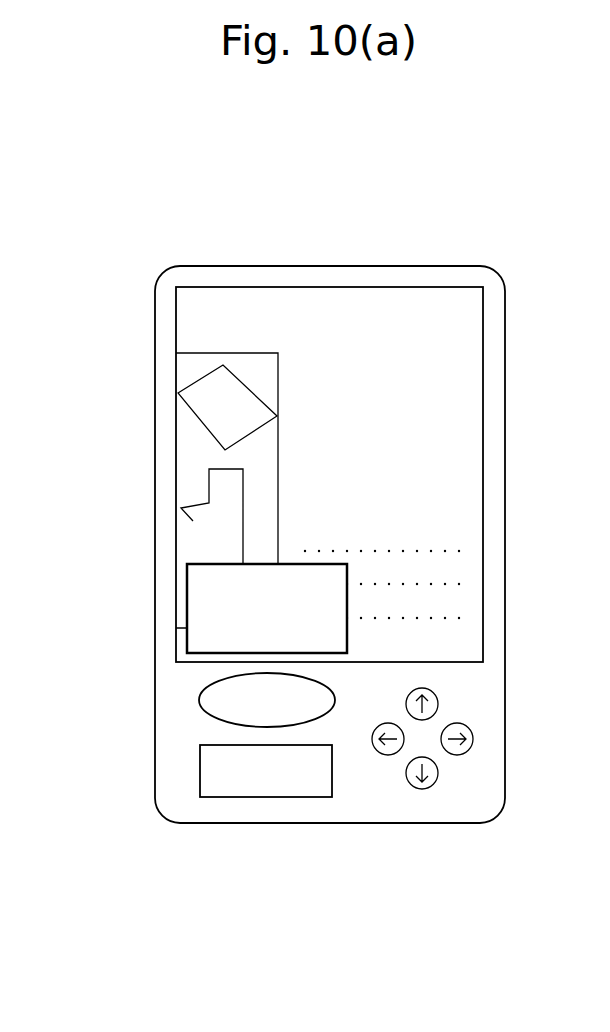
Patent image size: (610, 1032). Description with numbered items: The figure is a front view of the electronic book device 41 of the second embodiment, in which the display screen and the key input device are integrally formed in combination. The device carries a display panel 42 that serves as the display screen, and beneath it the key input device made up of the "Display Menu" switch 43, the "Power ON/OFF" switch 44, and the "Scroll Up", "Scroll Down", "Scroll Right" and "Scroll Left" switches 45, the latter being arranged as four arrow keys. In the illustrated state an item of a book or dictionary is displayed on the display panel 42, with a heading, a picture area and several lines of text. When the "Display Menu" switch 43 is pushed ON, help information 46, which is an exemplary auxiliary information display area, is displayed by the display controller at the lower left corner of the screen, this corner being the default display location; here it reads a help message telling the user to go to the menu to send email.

The electronic book device 41 is at (460, 266).
The display panel 42 is at (481, 307).
The Display Menu switch 43 is at (199, 700).
The Power ON/OFF switch 44 is at (200, 770).
The Scroll Up, Scroll Down, Scroll Right and Scroll Left switches 45 is at (432, 786).
The help information 46 is at (187, 606).